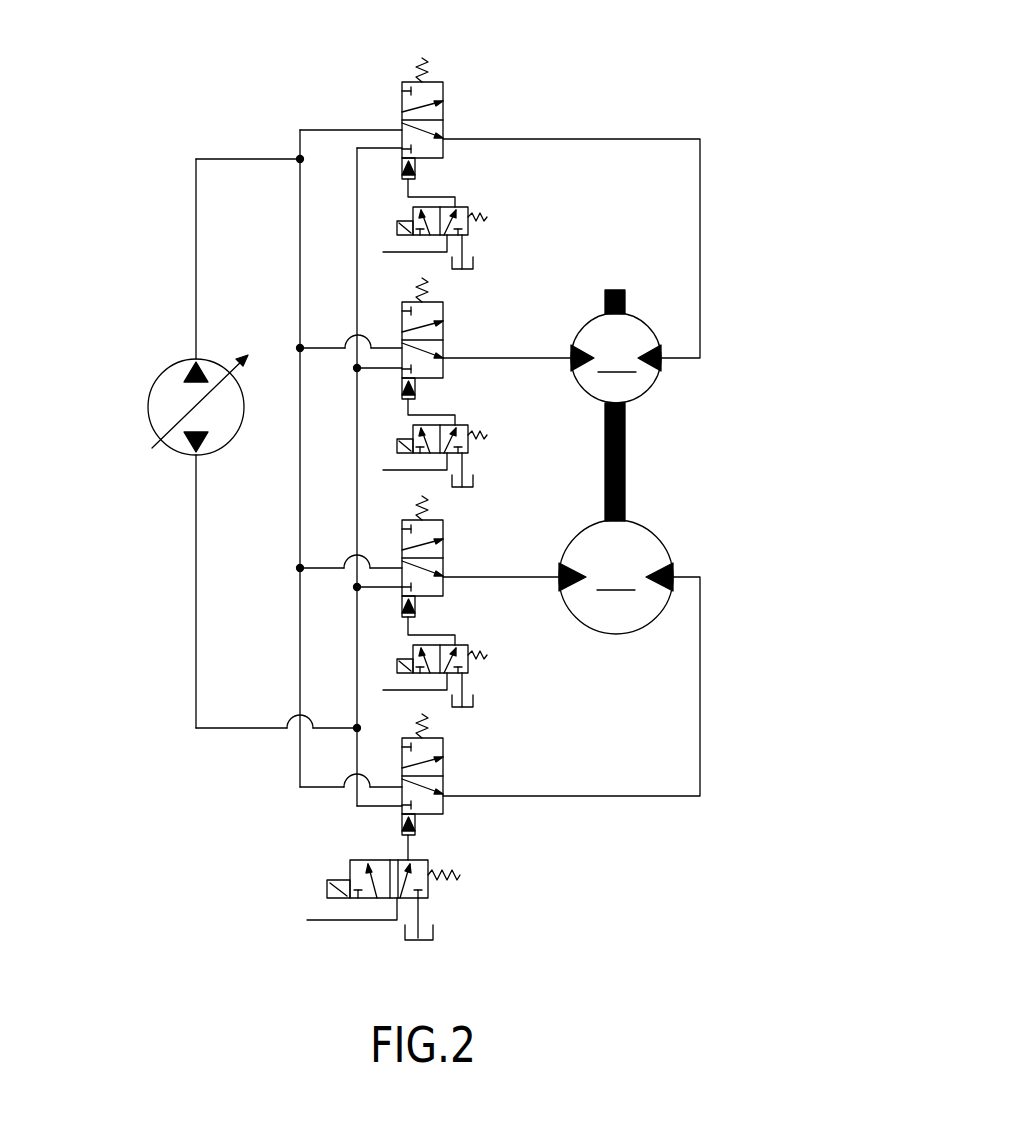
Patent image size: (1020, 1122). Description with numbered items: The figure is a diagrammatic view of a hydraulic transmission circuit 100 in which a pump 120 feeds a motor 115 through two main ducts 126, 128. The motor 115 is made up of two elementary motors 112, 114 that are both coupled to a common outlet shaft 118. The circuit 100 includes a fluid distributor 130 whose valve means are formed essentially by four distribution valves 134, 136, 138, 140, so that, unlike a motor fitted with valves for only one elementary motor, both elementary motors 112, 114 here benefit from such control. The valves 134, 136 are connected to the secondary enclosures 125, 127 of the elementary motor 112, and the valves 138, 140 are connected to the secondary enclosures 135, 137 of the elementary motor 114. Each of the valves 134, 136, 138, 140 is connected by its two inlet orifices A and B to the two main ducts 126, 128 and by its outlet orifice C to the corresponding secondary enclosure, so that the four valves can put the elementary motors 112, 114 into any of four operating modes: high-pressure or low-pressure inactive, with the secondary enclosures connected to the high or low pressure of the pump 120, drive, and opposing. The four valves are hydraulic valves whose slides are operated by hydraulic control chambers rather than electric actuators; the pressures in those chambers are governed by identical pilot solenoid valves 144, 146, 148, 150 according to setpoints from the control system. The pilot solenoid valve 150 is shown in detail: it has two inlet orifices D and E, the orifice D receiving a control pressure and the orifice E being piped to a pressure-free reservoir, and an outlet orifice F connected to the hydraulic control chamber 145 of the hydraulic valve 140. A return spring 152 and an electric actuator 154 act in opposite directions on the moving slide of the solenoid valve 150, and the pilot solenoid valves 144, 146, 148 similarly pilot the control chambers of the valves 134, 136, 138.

The hydraulic transmission circuit 100 is at (210, 88).
The elementary motor 112 is at (616, 358).
The elementary motor 114 is at (674, 528).
The motor 115 is at (653, 446).
The outlet shaft 118 is at (602, 300).
The pump 120 is at (168, 394).
The secondary enclosure 125 is at (597, 139).
The main duct 126 is at (252, 159).
The secondary enclosure 127 is at (539, 358).
The main duct 128 is at (245, 727).
The fluid distributor 130 is at (474, 98).
The distribution valve 134 is at (402, 86).
The secondary enclosure 135 is at (480, 577).
The distribution valve 136 is at (443, 310).
The secondary enclosure 137 is at (597, 796).
The distribution valve 138 is at (443, 528).
The distribution valve 140 is at (443, 748).
The pilot solenoid valve 144 is at (455, 210).
The hydraulic control chamber 145 is at (401, 838).
The pilot solenoid valve 146 is at (452, 425).
The pilot solenoid valve 148 is at (452, 645).
The pilot solenoid valve 150 is at (428, 890).
The return spring 152 is at (460, 875).
The electric actuator 154 is at (342, 880).